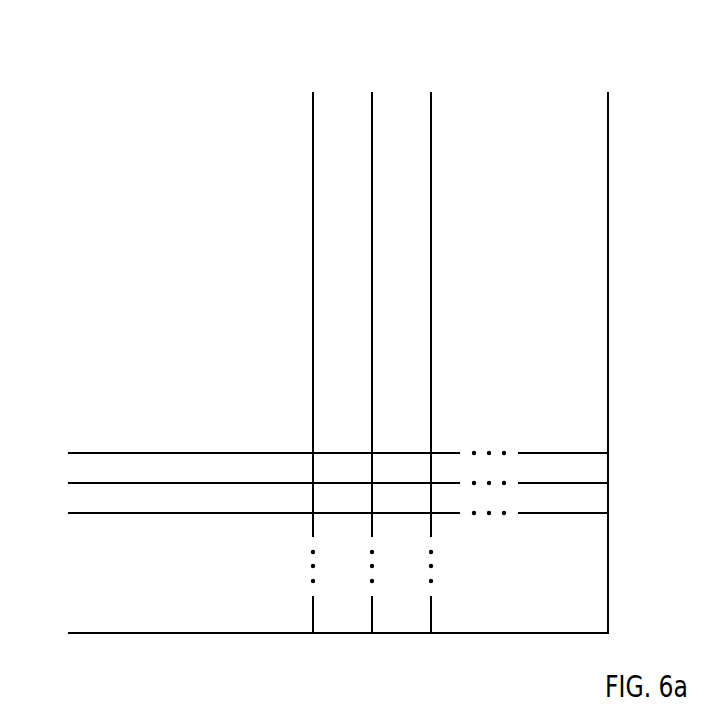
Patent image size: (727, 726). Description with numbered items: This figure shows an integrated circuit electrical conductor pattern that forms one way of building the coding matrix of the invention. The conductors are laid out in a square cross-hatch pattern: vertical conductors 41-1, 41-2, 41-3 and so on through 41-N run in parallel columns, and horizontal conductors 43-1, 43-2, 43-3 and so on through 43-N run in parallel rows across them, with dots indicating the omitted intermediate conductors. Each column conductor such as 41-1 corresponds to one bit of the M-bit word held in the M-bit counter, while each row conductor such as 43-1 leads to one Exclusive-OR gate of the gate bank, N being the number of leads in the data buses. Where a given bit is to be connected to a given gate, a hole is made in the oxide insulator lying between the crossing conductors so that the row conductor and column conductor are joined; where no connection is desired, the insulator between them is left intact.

The conductor 41-1 is at (316, 347).
The conductor 41-2 is at (373, 347).
The conductor 41-3 is at (432, 347).
The conductor 41-N is at (610, 348).
The conductor 43-1 is at (316, 453).
The conductor 43-2 is at (316, 483).
The conductor 43-3 is at (316, 513).
The conductor 43-N is at (315, 633).